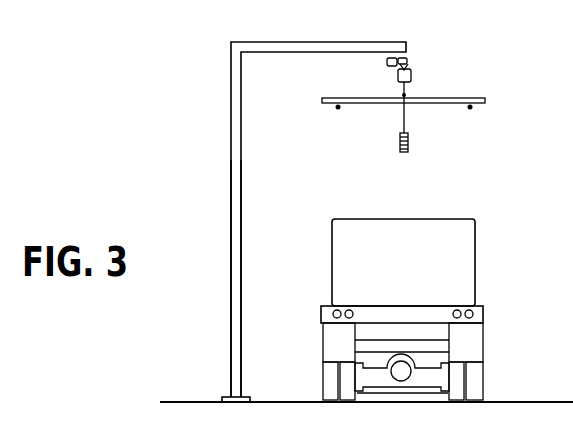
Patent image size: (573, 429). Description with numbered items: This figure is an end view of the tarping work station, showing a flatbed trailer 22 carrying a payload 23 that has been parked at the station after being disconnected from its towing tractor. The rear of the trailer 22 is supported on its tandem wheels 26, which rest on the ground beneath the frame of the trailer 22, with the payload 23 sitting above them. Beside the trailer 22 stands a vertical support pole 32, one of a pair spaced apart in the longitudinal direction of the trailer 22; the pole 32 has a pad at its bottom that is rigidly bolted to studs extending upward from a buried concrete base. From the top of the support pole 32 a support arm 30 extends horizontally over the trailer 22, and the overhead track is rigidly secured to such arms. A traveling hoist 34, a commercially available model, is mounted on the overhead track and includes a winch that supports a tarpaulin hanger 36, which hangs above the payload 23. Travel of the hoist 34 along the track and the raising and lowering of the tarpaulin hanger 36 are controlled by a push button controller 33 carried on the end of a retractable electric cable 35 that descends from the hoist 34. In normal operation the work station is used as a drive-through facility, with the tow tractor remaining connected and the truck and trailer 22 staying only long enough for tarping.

The flatbed trailer 22 is at (485, 308).
The payload 23 is at (477, 243).
The tandem wheels 26 is at (322, 380).
The support arm 30 is at (300, 42).
The vertical support pole 32 is at (231, 157).
The push button controller 33 is at (408, 148).
The traveling hoist 34 is at (411, 74).
The electric cable 35 is at (406, 113).
The tarpaulin hanger 36 is at (440, 99).